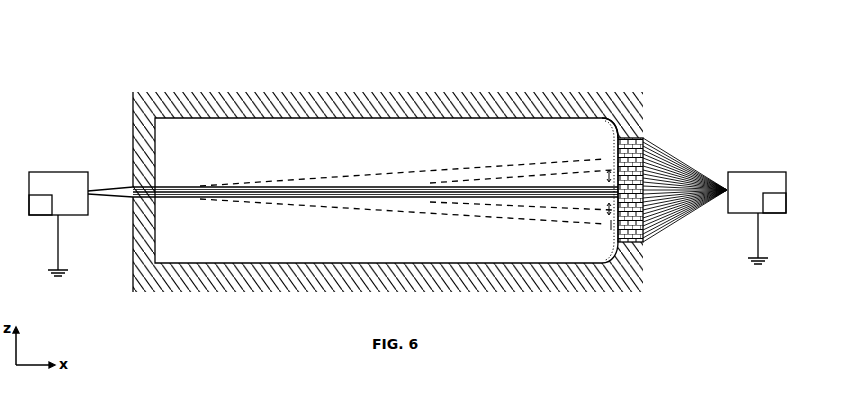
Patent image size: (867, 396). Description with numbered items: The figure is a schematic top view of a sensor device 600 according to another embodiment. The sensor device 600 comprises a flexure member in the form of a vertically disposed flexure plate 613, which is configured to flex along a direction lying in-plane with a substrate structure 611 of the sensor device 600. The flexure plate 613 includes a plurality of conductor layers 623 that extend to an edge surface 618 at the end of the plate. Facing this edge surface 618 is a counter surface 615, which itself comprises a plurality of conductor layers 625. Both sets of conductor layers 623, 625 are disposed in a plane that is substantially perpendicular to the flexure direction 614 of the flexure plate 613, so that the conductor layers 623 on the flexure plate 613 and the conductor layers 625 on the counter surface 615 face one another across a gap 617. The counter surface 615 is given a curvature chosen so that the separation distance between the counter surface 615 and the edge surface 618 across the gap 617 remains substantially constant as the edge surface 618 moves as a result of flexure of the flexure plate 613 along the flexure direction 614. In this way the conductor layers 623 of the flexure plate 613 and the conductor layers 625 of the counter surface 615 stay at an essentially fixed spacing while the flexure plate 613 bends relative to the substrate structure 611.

The sensor device 600 is at (371, 66).
The substrate structure 611 is at (481, 290).
The flexure plate 613 is at (381, 204).
The flexure direction 614 is at (605, 213).
The counter surface 615 is at (607, 263).
The gap 617 is at (603, 117).
The edge surface 618 is at (603, 165).
The conductor layers 623 is at (137, 200).
The conductor layers 625 is at (643, 140).